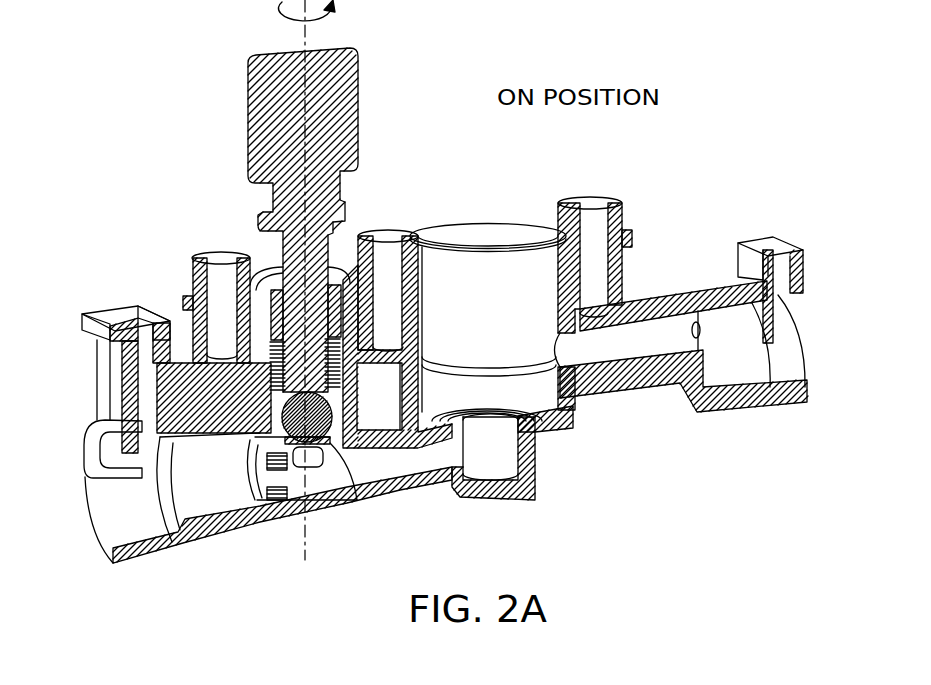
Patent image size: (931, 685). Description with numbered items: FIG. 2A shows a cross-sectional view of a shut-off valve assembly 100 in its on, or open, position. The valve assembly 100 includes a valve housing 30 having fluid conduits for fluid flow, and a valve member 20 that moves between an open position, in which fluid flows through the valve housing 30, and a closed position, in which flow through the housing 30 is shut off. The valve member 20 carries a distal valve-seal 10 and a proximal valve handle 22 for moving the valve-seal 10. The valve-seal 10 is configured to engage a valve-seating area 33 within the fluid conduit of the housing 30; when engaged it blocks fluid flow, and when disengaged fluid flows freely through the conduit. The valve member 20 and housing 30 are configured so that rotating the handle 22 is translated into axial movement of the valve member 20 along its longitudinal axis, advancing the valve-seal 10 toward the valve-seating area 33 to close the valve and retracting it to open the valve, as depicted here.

The valve assembly 100 is at (153, 152).
The valve handle 22 is at (344, 78).
The valve member 20 is at (345, 248).
The valve-seal 10 is at (362, 393).
The valve housing 30 is at (256, 528).
The valve-seating area 33 is at (356, 498).